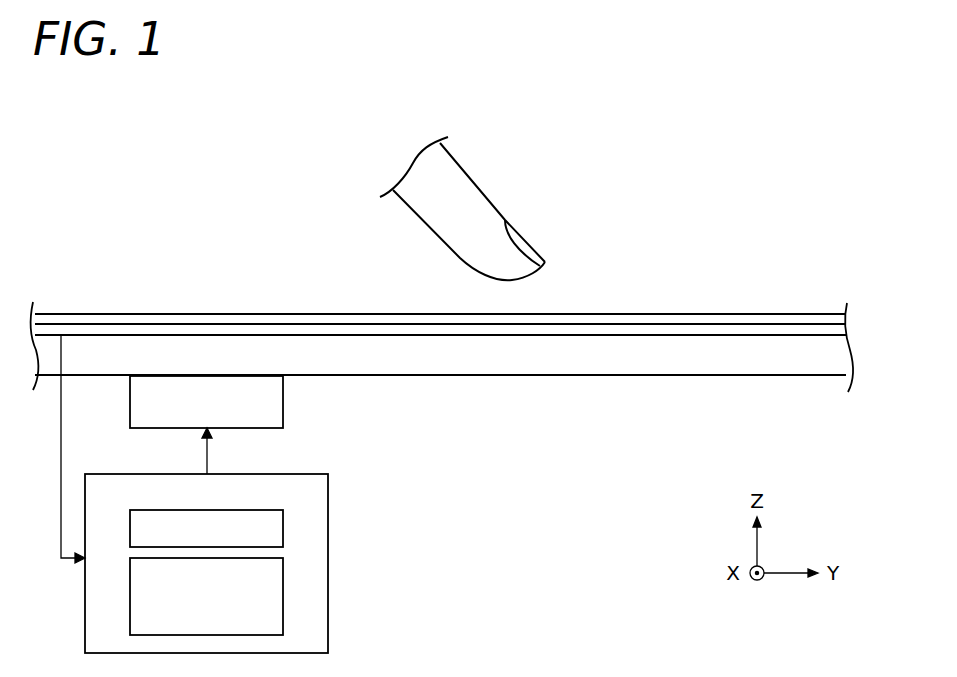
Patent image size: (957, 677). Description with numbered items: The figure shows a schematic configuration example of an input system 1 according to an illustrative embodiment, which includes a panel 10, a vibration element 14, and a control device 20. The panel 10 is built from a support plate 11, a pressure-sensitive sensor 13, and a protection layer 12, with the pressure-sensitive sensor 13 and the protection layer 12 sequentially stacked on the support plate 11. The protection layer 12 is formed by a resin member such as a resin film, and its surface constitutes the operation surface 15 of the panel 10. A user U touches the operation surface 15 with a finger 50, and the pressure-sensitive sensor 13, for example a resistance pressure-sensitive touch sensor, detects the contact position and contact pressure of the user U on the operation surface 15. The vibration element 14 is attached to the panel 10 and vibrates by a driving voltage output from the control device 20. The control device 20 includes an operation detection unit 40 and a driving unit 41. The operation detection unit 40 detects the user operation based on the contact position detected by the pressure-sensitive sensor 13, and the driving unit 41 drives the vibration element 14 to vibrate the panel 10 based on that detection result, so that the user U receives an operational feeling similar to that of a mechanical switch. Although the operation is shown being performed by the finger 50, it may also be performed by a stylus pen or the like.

The input system 1 is at (810, 256).
The panel 10 is at (598, 428).
The support plate 11 is at (692, 345).
The protection layer 12 is at (615, 320).
The pressure-sensitive sensor 13 is at (653, 330).
The vibration element 14 is at (283, 408).
The operation surface 15 is at (712, 314).
The control device 20 is at (328, 509).
The operation detection unit 40 is at (283, 595).
The driving unit 41 is at (283, 527).
The finger 50 is at (492, 200).
The user U is at (472, 152).